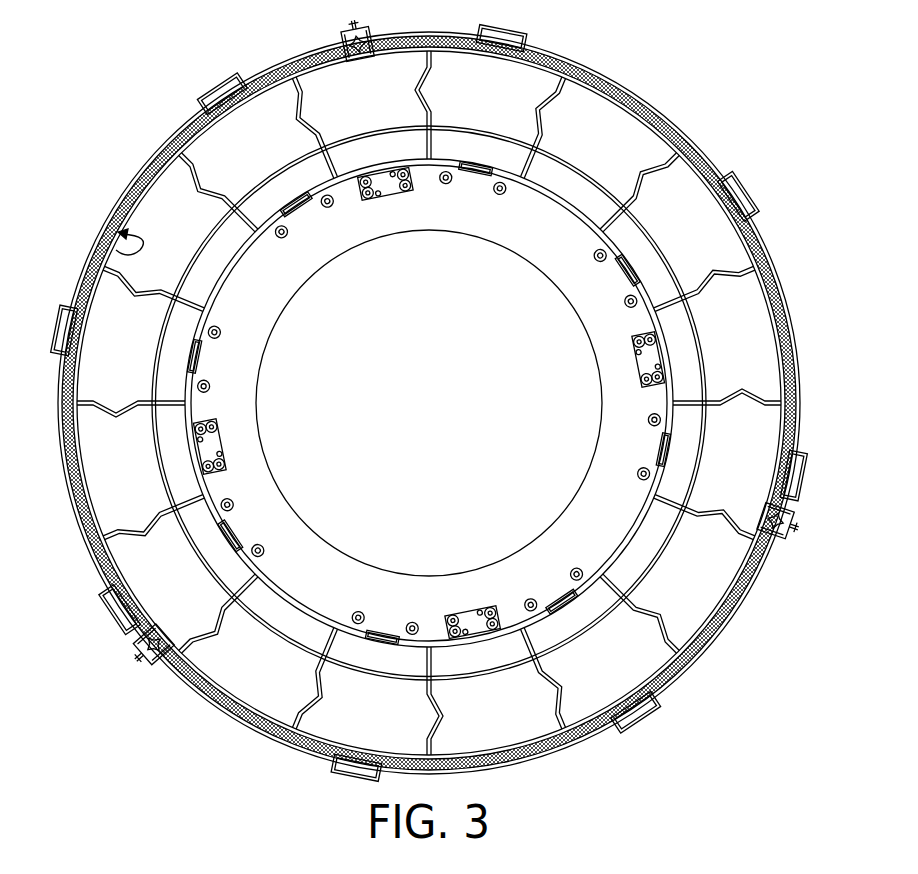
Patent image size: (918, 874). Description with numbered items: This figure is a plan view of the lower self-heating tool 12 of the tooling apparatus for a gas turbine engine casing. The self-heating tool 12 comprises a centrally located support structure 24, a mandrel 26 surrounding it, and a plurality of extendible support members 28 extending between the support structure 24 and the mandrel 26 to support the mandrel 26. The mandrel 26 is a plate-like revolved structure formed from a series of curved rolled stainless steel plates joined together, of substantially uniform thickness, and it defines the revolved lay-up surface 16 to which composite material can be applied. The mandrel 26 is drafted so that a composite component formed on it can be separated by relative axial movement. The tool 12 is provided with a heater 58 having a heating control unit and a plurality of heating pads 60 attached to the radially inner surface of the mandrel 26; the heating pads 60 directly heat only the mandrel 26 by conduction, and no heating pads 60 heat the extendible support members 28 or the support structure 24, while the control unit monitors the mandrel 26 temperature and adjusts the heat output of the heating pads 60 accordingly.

The lower self-heating tool 12 is at (708, 38).
The lay-up surface 16 is at (815, 386).
The support structure 24 is at (250, 392).
The mandrel 26 is at (783, 286).
The extendible support members 28 is at (652, 174).
The heater 58 is at (102, 235).
The heating pads 60 is at (180, 132).